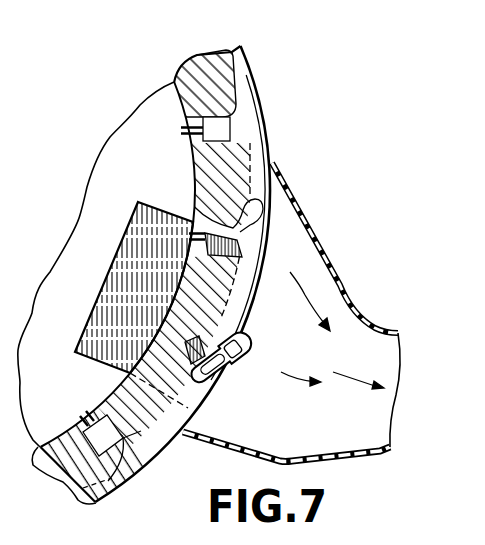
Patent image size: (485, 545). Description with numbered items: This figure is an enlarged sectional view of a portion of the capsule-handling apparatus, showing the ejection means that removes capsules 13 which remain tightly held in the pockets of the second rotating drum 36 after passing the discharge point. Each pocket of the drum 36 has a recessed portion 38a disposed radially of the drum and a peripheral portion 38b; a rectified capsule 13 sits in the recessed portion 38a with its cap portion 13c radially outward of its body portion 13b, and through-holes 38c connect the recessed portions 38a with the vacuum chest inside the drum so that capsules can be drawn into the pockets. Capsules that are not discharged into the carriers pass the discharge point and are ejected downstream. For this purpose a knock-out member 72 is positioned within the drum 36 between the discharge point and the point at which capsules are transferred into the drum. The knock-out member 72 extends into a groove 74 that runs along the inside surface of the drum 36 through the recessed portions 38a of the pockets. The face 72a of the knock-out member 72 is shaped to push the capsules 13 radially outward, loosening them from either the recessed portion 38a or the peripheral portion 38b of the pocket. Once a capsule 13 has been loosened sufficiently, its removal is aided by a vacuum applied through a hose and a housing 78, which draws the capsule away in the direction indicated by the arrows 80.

The capsule 13 is at (253, 343).
The body portion 13b is at (215, 368).
The cap portion 13c is at (230, 358).
The second rotating drum 36 is at (182, 116).
The recessed portion 38a is at (255, 120).
The peripheral portion 38b is at (241, 86).
The through-hole 38c is at (184, 132).
The knock-out member 72 is at (100, 298).
The face 72a is at (250, 301).
The groove 74 is at (250, 174).
The housing 78 is at (337, 282).
The arrows 80 is at (305, 293).